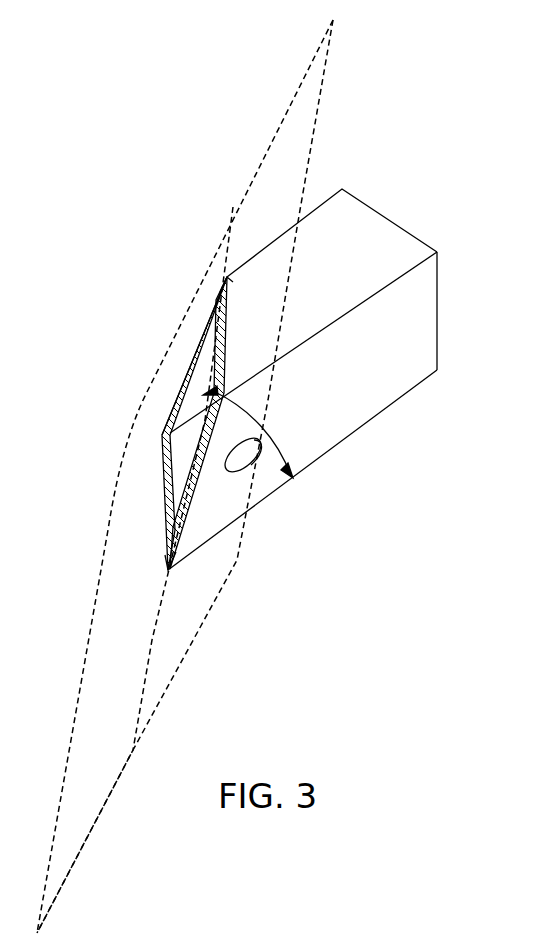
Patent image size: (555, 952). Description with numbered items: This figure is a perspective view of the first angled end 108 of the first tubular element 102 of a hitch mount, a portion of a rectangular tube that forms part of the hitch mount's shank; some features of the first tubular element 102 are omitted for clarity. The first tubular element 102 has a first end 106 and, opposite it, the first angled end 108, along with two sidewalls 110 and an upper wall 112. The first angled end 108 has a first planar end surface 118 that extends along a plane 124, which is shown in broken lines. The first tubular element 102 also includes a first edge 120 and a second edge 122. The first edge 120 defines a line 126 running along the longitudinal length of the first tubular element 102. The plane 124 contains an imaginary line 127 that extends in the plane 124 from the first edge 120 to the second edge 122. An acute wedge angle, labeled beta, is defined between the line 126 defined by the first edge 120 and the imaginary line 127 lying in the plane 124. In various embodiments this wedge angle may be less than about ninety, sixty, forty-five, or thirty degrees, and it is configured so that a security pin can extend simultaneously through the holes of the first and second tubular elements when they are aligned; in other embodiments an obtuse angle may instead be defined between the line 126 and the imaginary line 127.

The first tubular element 102 is at (346, 362).
The first end 106 is at (443, 302).
The first angled end 108 is at (281, 503).
The sidewalls 110 is at (410, 372).
The upper wall 112 is at (352, 208).
The first planar end surface 118 is at (160, 313).
The first edge 120 is at (212, 587).
The second edge 122 is at (178, 260).
The plane 124 is at (258, 98).
The line 126 is at (338, 445).
The imaginary line 127 is at (147, 667).